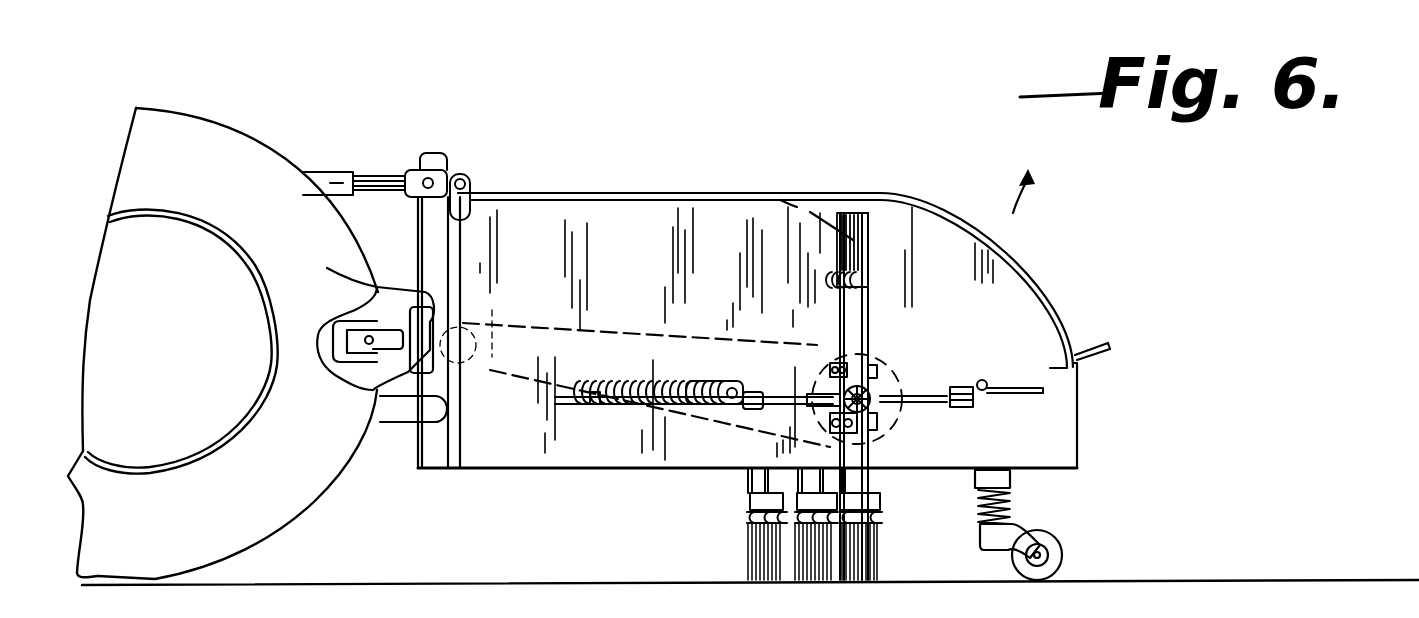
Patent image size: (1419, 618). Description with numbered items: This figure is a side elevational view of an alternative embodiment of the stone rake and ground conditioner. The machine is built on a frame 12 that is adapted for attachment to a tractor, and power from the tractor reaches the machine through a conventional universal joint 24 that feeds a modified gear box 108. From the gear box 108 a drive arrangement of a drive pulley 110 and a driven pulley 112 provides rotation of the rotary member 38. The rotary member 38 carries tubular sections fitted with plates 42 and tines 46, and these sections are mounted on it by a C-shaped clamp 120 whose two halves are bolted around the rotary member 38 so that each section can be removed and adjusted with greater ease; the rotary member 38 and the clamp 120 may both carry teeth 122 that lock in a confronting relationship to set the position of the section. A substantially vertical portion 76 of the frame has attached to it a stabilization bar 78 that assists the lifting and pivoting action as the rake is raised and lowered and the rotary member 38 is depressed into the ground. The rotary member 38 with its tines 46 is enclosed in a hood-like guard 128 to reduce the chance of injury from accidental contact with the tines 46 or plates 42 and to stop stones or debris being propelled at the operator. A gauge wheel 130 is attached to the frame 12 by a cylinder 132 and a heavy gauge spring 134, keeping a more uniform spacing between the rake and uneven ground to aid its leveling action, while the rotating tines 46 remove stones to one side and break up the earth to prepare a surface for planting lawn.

The frame 12 is at (400, 420).
The universal joint 24 is at (347, 380).
The rotary member 38 is at (872, 430).
The plates 42 is at (753, 487).
The tines 46 is at (733, 553).
The substantially vertical portion 76 is at (447, 160).
The stabilization bar 78 is at (347, 167).
The modified gear box 108 is at (330, 271).
The drive pulley 110 is at (480, 357).
The driven pulley 112 is at (935, 367).
The C-shaped clamp 120 is at (870, 365).
The teeth 122 is at (882, 263).
The hood-like guard 128 is at (877, 190).
The gauge wheel 130 is at (997, 530).
The cylinder 132 is at (1013, 510).
The heavy gauge spring 134 is at (980, 507).